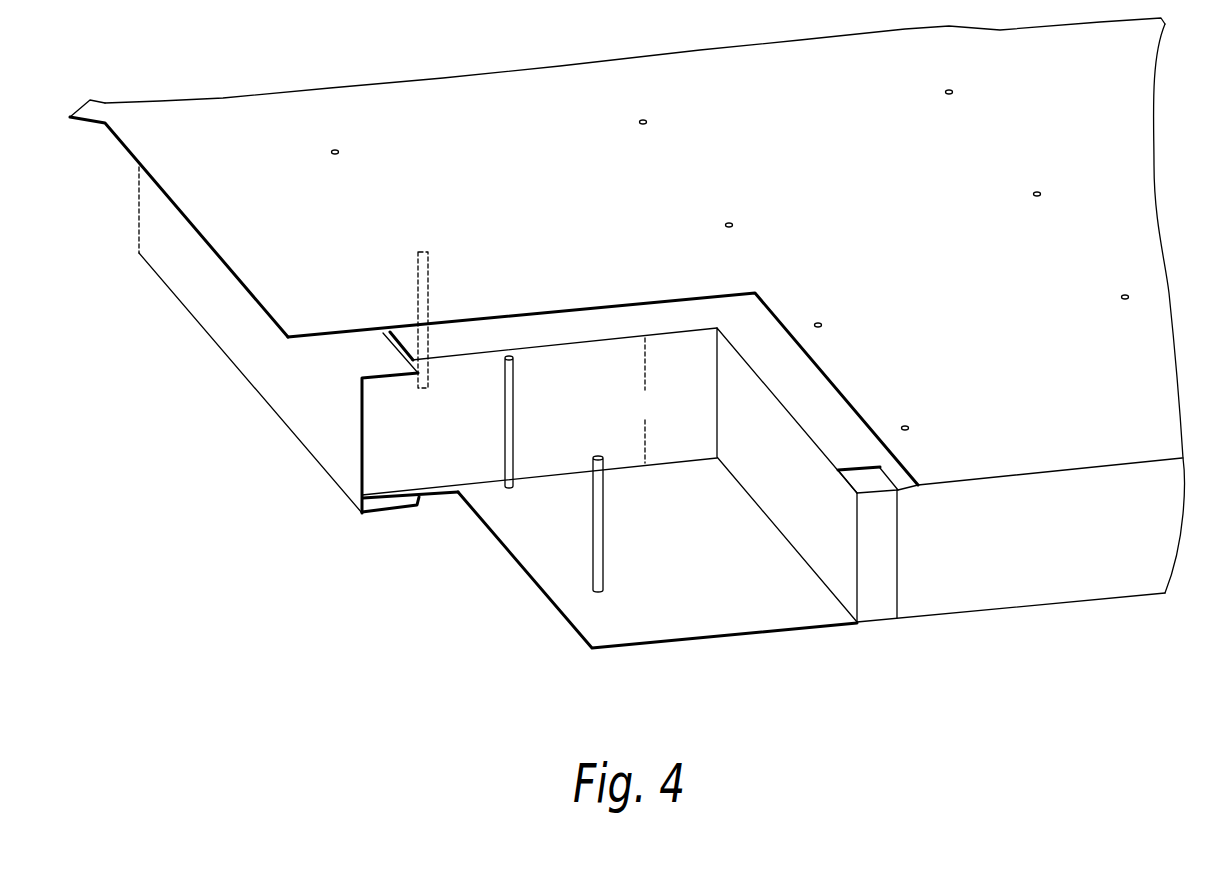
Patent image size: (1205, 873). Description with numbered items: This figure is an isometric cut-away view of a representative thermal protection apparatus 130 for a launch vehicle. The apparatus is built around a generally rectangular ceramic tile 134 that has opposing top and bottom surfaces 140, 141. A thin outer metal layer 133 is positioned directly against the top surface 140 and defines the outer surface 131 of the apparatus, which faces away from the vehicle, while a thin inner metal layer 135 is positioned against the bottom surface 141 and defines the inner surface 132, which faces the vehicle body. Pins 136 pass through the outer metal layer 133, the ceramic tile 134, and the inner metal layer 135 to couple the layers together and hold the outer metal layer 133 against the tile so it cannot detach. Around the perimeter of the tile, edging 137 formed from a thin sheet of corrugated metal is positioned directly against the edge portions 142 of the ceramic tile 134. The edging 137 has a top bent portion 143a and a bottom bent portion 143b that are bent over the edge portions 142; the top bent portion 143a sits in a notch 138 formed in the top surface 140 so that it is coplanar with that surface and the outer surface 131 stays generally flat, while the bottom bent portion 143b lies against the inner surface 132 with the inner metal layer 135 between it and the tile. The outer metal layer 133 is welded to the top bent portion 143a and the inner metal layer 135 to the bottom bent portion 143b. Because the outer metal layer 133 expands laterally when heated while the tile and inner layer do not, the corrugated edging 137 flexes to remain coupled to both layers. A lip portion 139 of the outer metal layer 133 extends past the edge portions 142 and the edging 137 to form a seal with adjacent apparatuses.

The thermal protection apparatus 130 is at (158, 573).
The outer surface 131 is at (233, 128).
The inner surface 132 is at (575, 642).
The outer metal layer 133 is at (425, 102).
The ceramic tile 134 is at (798, 535).
The inner metal layer 135 is at (673, 625).
The pin 136 is at (417, 298).
The edging 137 is at (1042, 593).
The notch 138 is at (882, 482).
The lip portion 139 is at (288, 327).
The top surface 140 is at (460, 328).
The bottom surface 141 is at (428, 490).
The edge portion 142 is at (877, 610).
The top bent portion 143a is at (367, 367).
The bottom bent portion 143b is at (377, 515).